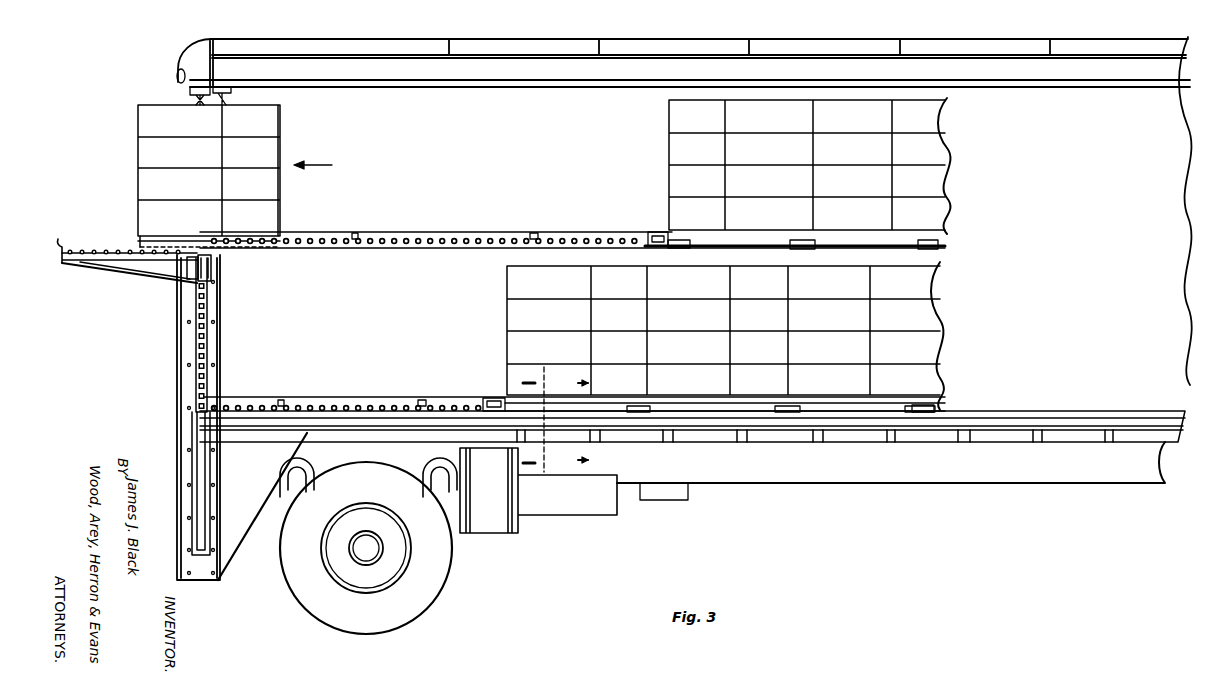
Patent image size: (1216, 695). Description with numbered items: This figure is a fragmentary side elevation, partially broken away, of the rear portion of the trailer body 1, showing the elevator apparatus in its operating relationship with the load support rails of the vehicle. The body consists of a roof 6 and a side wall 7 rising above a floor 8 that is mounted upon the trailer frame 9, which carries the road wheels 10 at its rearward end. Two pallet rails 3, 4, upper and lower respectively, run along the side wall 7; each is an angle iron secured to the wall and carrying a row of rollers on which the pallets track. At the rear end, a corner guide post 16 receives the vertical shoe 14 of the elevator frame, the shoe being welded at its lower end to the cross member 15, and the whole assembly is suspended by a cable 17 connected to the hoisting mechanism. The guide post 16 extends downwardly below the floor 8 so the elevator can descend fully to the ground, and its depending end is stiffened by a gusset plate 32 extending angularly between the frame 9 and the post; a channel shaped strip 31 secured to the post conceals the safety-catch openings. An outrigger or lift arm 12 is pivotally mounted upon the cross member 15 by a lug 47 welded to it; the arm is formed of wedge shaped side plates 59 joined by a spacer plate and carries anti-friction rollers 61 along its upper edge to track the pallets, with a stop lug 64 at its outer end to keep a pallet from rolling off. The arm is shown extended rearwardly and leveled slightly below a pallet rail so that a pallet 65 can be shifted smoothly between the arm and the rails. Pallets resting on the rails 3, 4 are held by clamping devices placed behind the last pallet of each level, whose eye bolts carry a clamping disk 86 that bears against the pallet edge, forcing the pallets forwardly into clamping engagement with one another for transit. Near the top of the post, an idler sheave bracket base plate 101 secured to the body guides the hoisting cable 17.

The trailer body 1 is at (500, 44).
The upper pallet rails 3 is at (432, 232).
The lower pallet rails 4 is at (386, 396).
The roof 6 is at (340, 40).
The side wall 7 is at (1174, 156).
The floor 8 is at (938, 408).
The trailer frame 9 is at (802, 474).
The road wheels 10 is at (442, 558).
The outrigger or lift arm 12 is at (145, 283).
The vertical shoe 14 is at (555, 420).
The cross member 15 is at (212, 268).
The corner guide post 16 is at (185, 391).
The cable 17 is at (196, 98).
The channel shaped strip 31 is at (200, 506).
The gusset plate 32 is at (238, 530).
The lug 47 is at (186, 268).
The side plate 59 is at (118, 264).
The anti-friction rollers 61 is at (102, 252).
The stop element or lug 64 is at (62, 248).
The pallet 65 is at (176, 232).
The clamping disk 86 is at (672, 240).
The base plate 101 is at (229, 96).